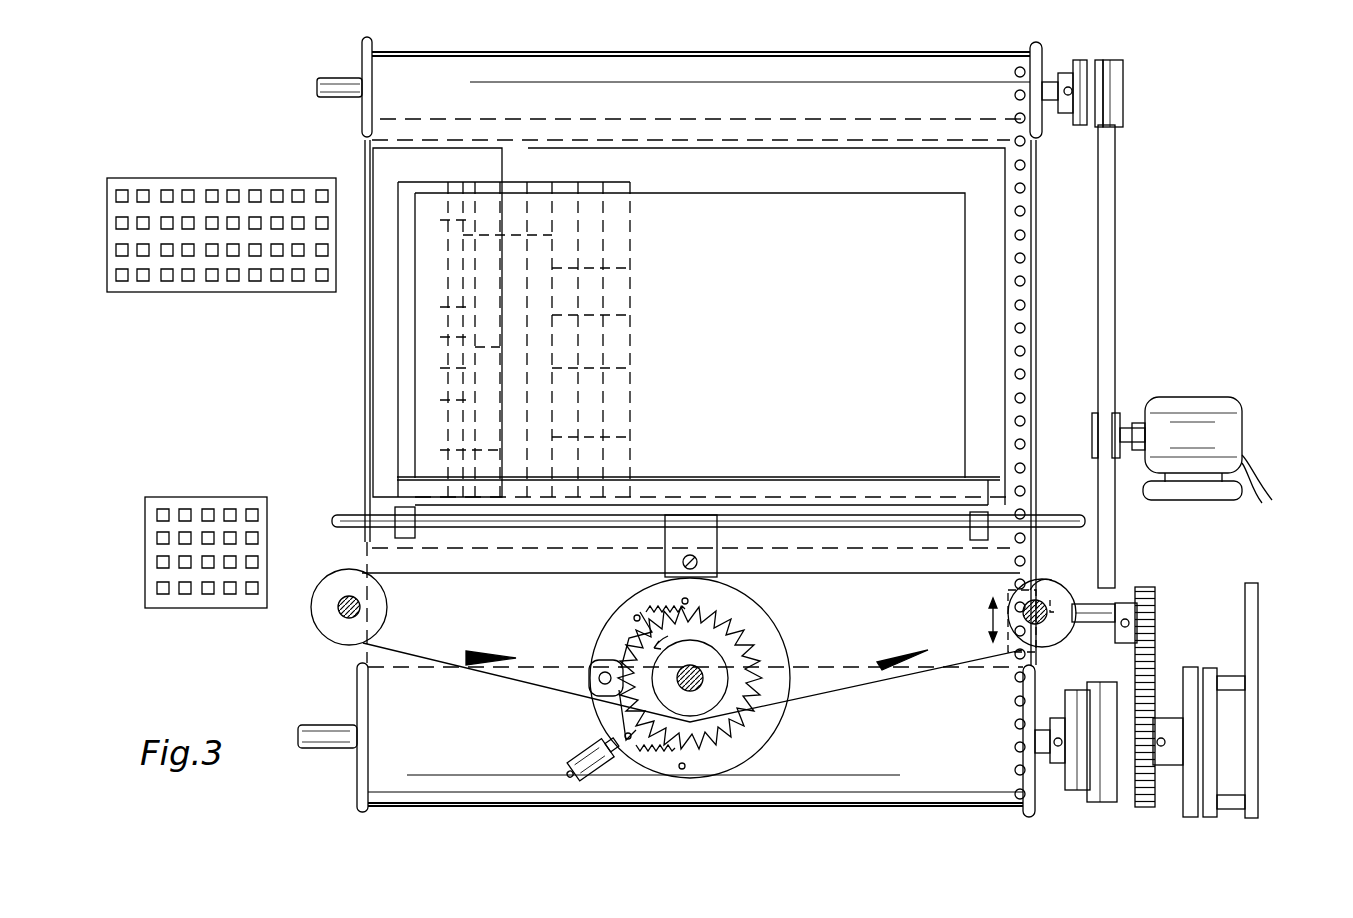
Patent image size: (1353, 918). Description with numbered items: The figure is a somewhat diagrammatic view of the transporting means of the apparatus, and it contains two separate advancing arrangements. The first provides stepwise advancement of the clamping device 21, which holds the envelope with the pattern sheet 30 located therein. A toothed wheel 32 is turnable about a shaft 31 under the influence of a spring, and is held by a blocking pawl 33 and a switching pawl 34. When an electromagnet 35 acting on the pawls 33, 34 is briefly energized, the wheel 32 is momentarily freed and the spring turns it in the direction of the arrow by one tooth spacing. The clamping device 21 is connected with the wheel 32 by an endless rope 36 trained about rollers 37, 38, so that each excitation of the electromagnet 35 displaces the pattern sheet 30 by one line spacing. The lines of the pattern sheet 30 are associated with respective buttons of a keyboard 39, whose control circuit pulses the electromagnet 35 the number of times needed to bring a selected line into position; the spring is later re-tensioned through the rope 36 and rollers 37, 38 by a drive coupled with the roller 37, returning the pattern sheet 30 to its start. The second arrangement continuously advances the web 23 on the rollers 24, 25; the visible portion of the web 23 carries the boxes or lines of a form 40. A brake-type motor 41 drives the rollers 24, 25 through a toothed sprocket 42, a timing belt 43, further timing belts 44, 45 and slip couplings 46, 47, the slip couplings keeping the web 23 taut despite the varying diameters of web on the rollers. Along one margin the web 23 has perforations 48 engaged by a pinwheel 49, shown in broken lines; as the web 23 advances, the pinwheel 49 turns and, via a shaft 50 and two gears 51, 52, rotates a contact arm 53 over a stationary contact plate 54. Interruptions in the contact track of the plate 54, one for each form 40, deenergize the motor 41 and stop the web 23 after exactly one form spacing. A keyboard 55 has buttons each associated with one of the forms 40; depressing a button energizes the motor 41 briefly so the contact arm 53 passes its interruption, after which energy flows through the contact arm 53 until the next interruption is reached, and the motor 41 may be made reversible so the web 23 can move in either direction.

The clamping device 21 is at (398, 507).
The web 23 is at (1022, 220).
The roller 24 is at (367, 63).
The roller 25 is at (360, 784).
The pattern sheet 30 is at (950, 295).
The shaft 31 is at (695, 689).
The toothed wheel 32 is at (738, 718).
The blocking pawl 33 is at (620, 632).
The switching pawl 34 is at (615, 720).
The electromagnet 35 is at (576, 772).
The rope 36 is at (498, 679).
The roller 37 is at (1047, 592).
The roller 38 is at (335, 630).
The keyboard 39 is at (178, 290).
The form 40 is at (450, 302).
The brake-type motor 41 is at (1220, 410).
The toothed sprocket 42 is at (1120, 410).
The timing belt 43 is at (1100, 312).
The timing belt 44 is at (1122, 125).
The timing belt 45 is at (1065, 755).
The slip coupling 46 is at (1081, 126).
The slip coupling 47 is at (1060, 706).
The perforations 48 is at (1024, 260).
The pinwheel 49 is at (1038, 578).
The shaft 50 is at (1082, 626).
The gear 51 is at (1156, 603).
The gear 52 is at (1022, 790).
The contact arm 53 is at (1190, 667).
The contact plate 54 is at (1210, 776).
The keyboard 55 is at (178, 602).